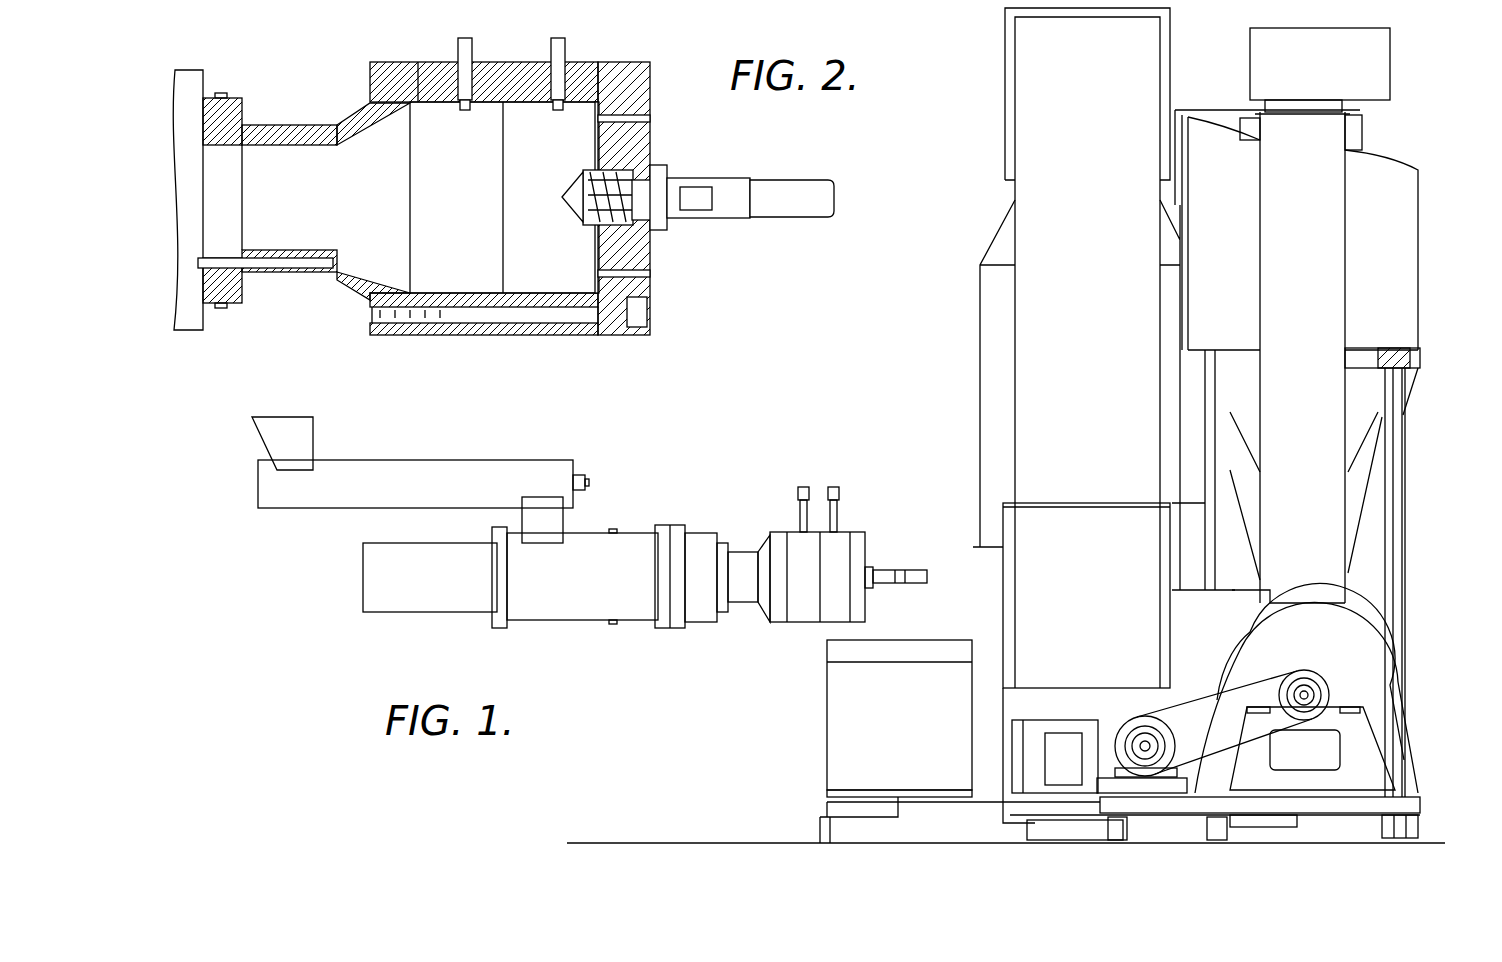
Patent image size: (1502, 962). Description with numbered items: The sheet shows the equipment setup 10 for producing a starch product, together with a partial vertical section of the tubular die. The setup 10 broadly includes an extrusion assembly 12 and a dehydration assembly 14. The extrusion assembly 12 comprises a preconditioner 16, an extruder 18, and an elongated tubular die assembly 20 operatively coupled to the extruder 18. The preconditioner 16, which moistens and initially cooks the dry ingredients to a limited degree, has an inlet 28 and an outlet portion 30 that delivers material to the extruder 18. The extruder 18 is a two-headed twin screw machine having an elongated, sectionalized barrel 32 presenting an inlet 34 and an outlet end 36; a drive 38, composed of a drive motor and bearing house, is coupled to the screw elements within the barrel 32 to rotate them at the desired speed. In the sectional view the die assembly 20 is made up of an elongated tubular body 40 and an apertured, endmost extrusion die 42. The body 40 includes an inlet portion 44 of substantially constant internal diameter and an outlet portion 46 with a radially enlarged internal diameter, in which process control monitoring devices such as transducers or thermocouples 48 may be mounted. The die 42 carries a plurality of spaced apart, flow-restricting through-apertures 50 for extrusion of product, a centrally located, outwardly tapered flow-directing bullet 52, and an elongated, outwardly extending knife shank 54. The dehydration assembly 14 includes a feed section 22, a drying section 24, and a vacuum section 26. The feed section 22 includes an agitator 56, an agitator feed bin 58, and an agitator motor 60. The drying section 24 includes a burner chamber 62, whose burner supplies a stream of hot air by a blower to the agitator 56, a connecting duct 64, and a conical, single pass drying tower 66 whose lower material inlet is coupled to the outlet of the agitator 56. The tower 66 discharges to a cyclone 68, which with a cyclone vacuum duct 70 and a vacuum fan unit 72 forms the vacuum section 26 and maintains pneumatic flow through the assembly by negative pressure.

In FIG. 1, the equipment setup 10 is at (708, 718).
In FIG. 1, the extrusion assembly 12 is at (582, 529).
In FIG. 1, the dehydration assembly 14 is at (1121, 422).
In FIG. 1, the preconditioner 16 is at (386, 448).
In FIG. 1, the extruder 18 is at (631, 559).
In FIG. 2, the die assembly 20 is at (297, 68).
In FIG. 1, the die assembly 20 is at (849, 501).
In FIG. 1, the feed section 22 is at (810, 808).
In FIG. 1, the drying section 24 is at (1042, 299).
In FIG. 1, the vacuum section 26 is at (1321, 412).
In FIG. 1, the inlet 28 is at (290, 418).
In FIG. 1, the outlet portion 30 is at (585, 488).
In FIG. 1, the barrel 32 is at (581, 621).
In FIG. 1, the inlet 34 is at (525, 523).
In FIG. 1, the outlet end 36 is at (697, 624).
In FIG. 1, the drive 38 is at (363, 582).
In FIG. 2, the tubular body 40 is at (600, 62).
In FIG. 1, the tubular body 40 is at (850, 520).
In FIG. 2, the extrusion die 42 is at (650, 80).
In FIG. 2, the inlet portion 44 is at (262, 275).
In FIG. 2, the outlet portion 46 is at (500, 62).
In FIG. 2, the thermocouples 48 is at (458, 45).
In FIG. 1, the thermocouples 48 is at (833, 487).
In FIG. 2, the through-apertures 50 is at (640, 118).
In FIG. 2, the bullet 52 is at (578, 210).
In FIG. 2, the knife shank 54 is at (790, 187).
In FIG. 1, the knife shank 54 is at (900, 572).
In FIG. 1, the agitator 56 is at (992, 600).
In FIG. 1, the agitator feed bin 58 is at (838, 745).
In FIG. 1, the agitator motor 60 is at (1033, 740).
In FIG. 1, the burner chamber 62 is at (990, 335).
In FIG. 1, the connecting duct 64 is at (1028, 183).
In FIG. 1, the drying tower 66 is at (1180, 128).
In FIG. 1, the cyclone 68 is at (1402, 312).
In FIG. 1, the cyclone vacuum duct 70 is at (1340, 142).
In FIG. 1, the vacuum fan unit 72 is at (1375, 680).